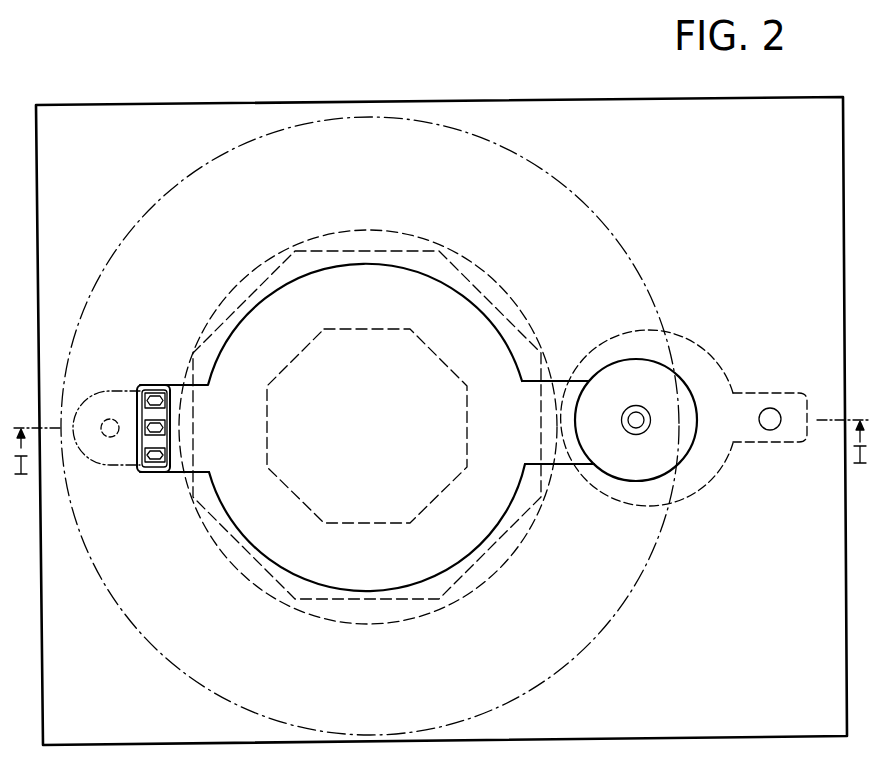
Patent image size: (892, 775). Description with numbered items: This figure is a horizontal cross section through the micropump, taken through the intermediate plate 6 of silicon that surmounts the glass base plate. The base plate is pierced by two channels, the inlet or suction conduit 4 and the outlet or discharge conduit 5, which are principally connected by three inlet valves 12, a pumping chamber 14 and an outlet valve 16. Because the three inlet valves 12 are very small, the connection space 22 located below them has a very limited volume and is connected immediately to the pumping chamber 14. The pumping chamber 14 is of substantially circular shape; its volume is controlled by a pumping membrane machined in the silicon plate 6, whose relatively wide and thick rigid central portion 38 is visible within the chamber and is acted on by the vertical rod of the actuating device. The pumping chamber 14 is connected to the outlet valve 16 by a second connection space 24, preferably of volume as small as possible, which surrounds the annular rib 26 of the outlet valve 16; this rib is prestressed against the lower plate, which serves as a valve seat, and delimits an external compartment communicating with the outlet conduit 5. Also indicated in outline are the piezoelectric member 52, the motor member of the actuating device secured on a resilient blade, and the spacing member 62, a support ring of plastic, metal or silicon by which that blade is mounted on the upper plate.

The inlet conduit 4 is at (108, 415).
The outlet conduit 5 is at (771, 431).
The intermediate plate 6 is at (441, 421).
The inlet valves 12 is at (176, 455).
The pumping chamber 14 is at (476, 525).
The outlet valve 16 is at (652, 436).
The connection space 22 is at (179, 410).
The second connection space 24 is at (571, 437).
The annular rib 26 is at (638, 406).
The rigid central portion 38 is at (300, 372).
The piezoelectric member 52 is at (503, 294).
The spacing member 62 is at (515, 178).